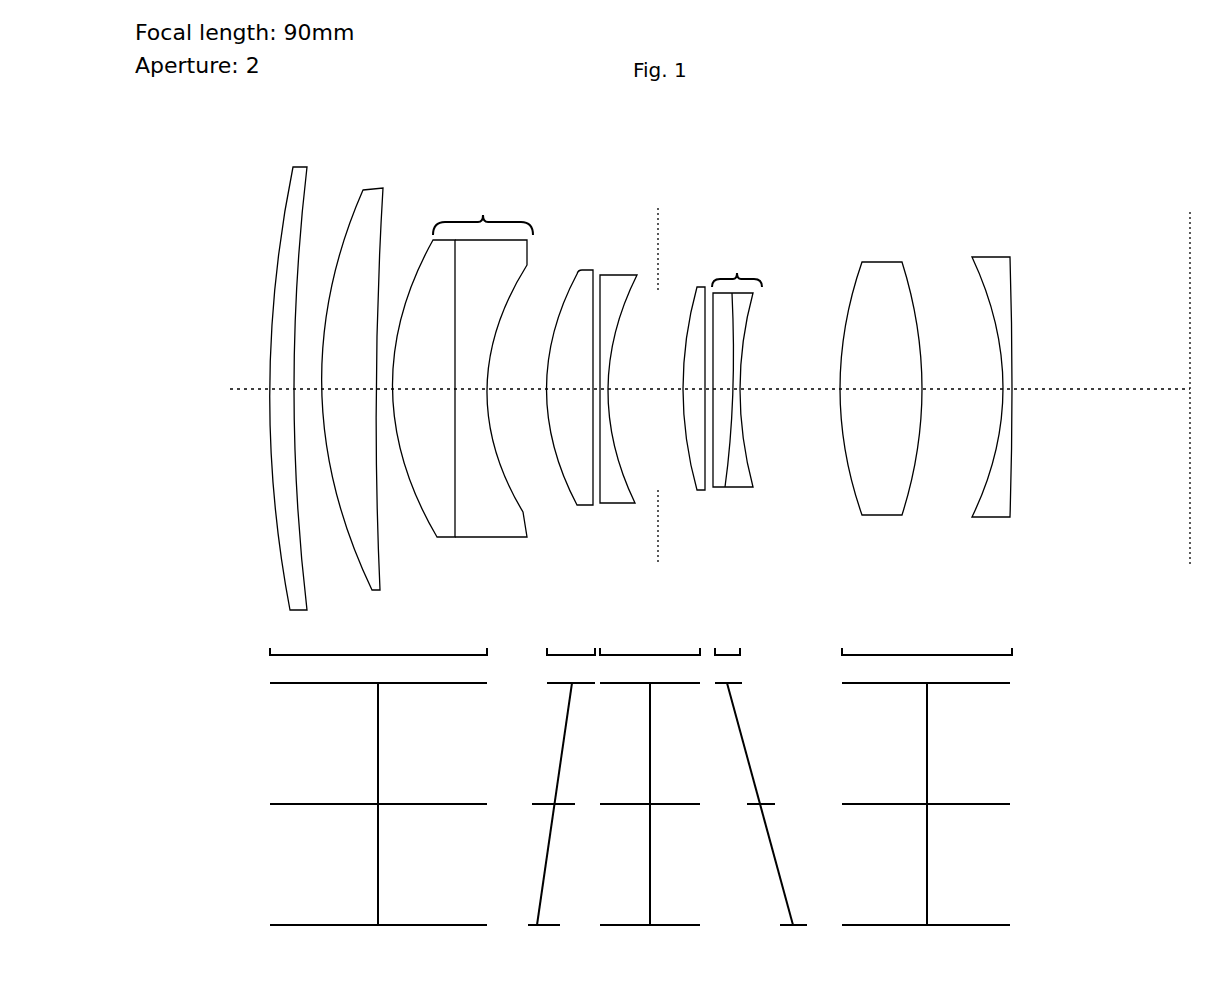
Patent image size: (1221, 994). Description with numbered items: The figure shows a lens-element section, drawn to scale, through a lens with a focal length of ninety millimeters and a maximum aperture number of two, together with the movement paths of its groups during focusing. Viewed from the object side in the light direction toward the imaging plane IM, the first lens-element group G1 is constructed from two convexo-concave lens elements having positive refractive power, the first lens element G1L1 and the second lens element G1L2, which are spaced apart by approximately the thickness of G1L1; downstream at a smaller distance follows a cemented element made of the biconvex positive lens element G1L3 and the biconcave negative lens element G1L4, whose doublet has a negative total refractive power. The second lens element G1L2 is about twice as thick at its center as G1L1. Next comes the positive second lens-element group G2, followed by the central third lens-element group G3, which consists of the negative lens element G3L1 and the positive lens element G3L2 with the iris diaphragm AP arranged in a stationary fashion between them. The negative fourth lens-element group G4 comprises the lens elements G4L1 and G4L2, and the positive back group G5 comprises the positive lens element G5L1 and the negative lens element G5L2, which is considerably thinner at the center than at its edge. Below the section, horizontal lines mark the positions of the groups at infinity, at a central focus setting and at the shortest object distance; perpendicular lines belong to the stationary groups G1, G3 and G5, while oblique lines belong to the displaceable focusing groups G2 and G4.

The first lens-element group G1 is at (401, 546).
The first lens element G1L1 is at (294, 401).
The second lens element G1L2 is at (360, 404).
The third lens element G1L3 is at (437, 408).
The fourth lens element G1L4 is at (491, 408).
The second lens-element group G2 is at (566, 597).
The third lens-element group G3 is at (652, 600).
The first lens element of the central group G3L1 is at (617, 397).
The second lens element of the central group G3L2 is at (687, 401).
The fourth lens-element group G4 is at (757, 588).
The first lens element of the fourth group G4L1 is at (736, 404).
The second lens element of the fourth group G4L2 is at (762, 404).
The fifth lens-element group G5 is at (926, 591).
The first lens element of the back group G5L1 is at (881, 407).
The second lens element of the back group G5L2 is at (991, 405).
The iris diaphragm AP is at (657, 402).
The imaging plane IM is at (1188, 406).